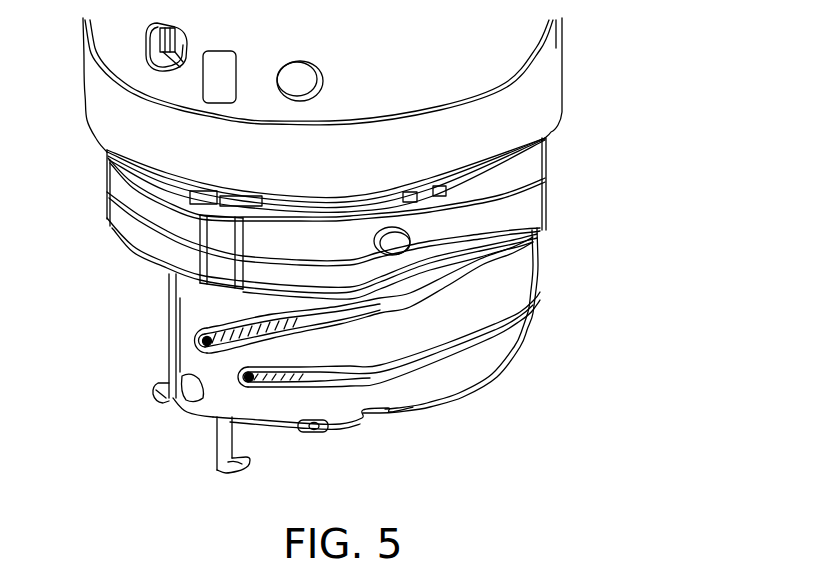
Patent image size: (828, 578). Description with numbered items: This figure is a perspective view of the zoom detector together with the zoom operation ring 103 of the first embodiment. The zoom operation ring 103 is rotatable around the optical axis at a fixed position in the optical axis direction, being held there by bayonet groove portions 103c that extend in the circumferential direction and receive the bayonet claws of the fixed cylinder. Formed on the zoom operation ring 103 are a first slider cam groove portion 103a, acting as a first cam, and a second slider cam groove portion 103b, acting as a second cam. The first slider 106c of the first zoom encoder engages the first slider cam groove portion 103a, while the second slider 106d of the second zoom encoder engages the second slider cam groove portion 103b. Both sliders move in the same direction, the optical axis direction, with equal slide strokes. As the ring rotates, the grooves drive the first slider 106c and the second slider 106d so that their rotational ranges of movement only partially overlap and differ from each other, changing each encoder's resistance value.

The zoom operation ring 103 is at (527, 105).
The first slider cam groove portion 103a is at (407, 295).
The second slider cam groove portion 103b is at (400, 405).
The bayonet groove portions 103c is at (482, 193).
The first slider 106c is at (190, 331).
The second slider 106d is at (255, 378).